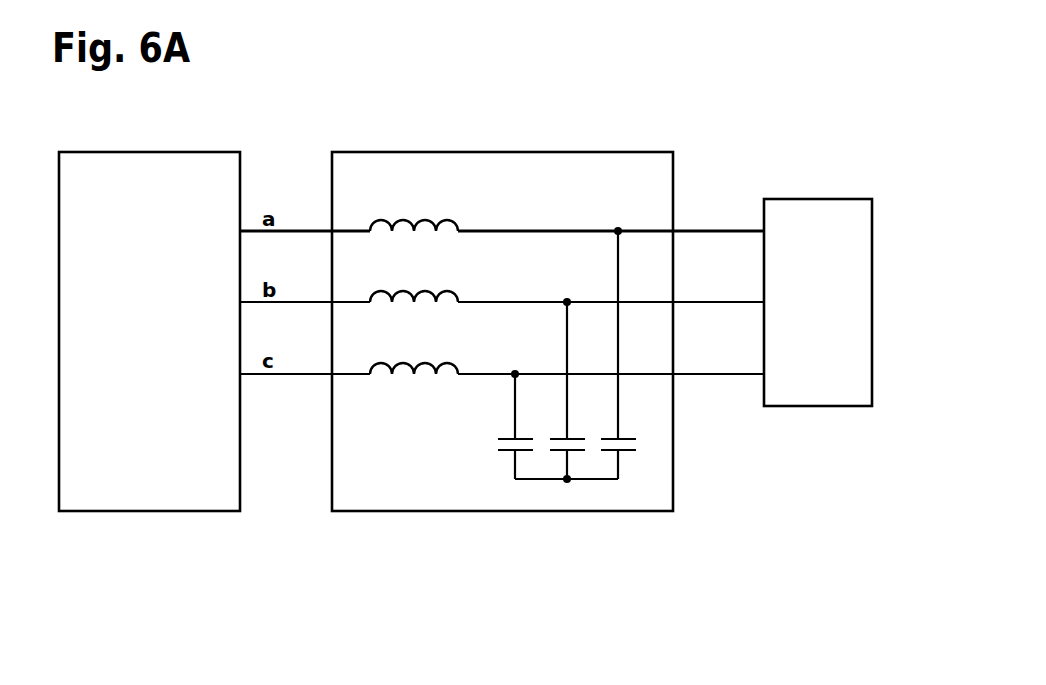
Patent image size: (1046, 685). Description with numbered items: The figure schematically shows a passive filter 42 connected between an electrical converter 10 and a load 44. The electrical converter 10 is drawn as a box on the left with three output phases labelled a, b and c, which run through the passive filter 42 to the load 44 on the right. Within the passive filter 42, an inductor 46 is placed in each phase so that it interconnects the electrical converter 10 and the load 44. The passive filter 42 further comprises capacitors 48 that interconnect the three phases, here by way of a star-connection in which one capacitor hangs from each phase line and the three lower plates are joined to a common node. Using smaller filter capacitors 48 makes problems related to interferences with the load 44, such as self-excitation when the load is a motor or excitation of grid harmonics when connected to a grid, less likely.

The electrical converter 10 is at (173, 511).
The passive filter 42 is at (540, 151).
The load 44 is at (820, 198).
The inductor 46 is at (420, 293).
The capacitors 48 is at (608, 451).